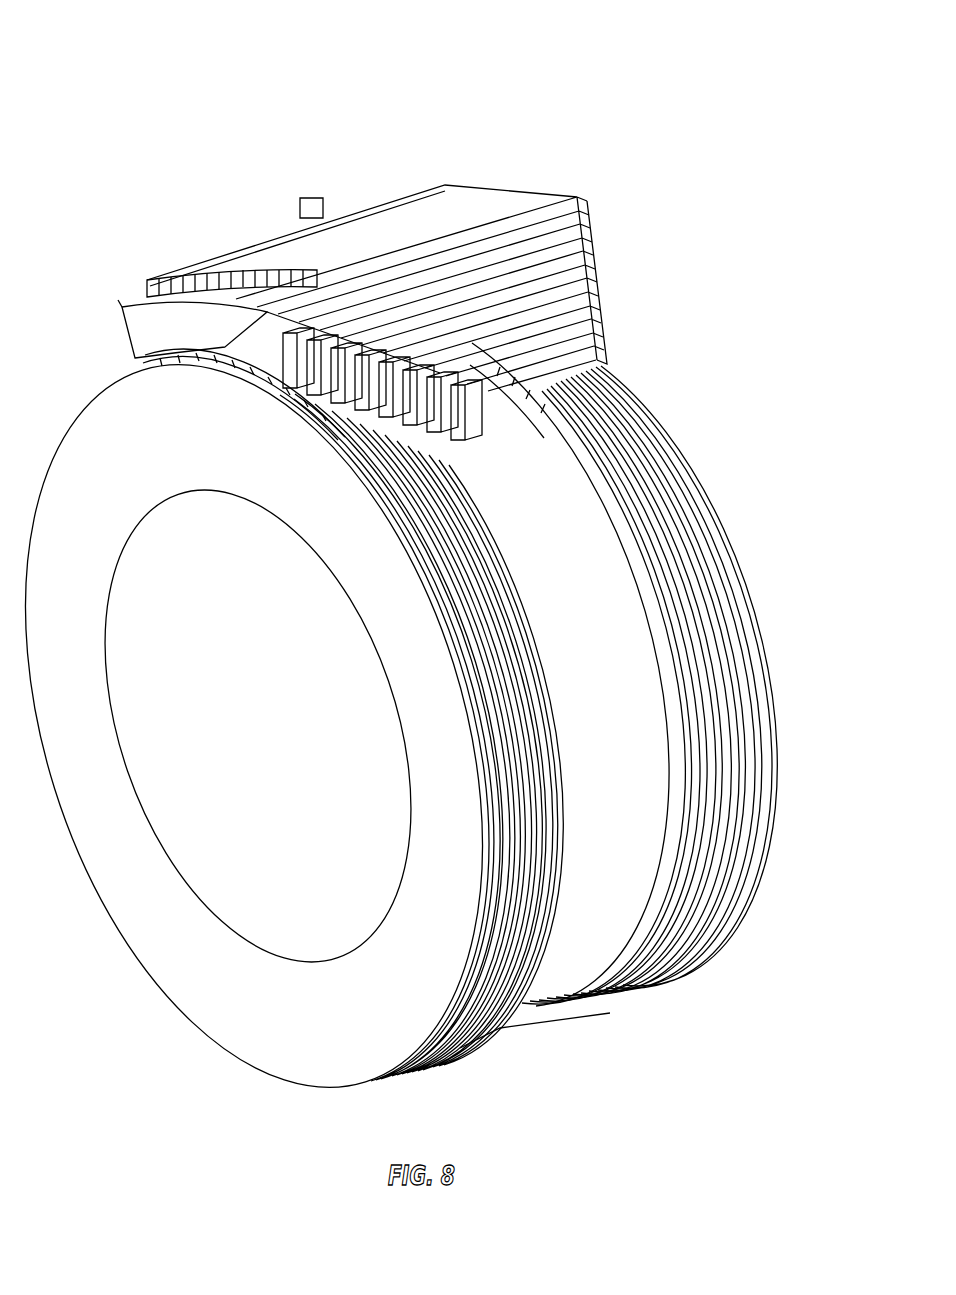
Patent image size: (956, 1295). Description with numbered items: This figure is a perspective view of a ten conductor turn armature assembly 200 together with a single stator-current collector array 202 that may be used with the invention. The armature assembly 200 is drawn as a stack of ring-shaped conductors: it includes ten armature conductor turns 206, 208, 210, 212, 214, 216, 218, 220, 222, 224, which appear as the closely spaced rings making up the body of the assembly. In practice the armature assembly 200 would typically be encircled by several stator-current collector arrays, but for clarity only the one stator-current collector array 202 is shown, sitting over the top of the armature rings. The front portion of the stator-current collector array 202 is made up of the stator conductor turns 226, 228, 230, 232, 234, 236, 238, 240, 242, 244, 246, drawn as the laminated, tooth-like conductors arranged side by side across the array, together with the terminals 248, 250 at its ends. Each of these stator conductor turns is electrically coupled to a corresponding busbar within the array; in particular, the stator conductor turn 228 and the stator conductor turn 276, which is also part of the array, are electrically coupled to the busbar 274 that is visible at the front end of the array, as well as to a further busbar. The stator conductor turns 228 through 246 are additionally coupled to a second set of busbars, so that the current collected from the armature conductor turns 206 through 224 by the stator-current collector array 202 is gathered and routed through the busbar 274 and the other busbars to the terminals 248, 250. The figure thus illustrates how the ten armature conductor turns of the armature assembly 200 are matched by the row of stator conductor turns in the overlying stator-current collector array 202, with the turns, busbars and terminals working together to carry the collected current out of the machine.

The armature assembly 200 is at (202, 967).
The stator-current collector array 202 is at (344, 551).
The armature conductor turn 206 is at (730, 538).
The armature conductor turn 208 is at (732, 575).
The armature conductor turn 210 is at (731, 610).
The armature conductor turn 212 is at (729, 647).
The armature conductor turn 214 is at (726, 681).
The armature conductor turn 216 is at (722, 716).
The armature conductor turn 218 is at (715, 750).
The armature conductor turn 220 is at (707, 782).
The armature conductor turn 222 is at (697, 812).
The armature conductor turn 224 is at (687, 842).
The stator conductor turn 226 is at (356, 300).
The stator conductor turn 228 is at (210, 367).
The stator conductor turn 230 is at (312, 240).
The stator conductor turn 232 is at (295, 275).
The stator conductor turn 234 is at (450, 227).
The stator conductor turn 236 is at (480, 247).
The stator conductor turn 238 is at (513, 280).
The stator conductor turn 240 is at (545, 300).
The stator conductor turn 242 is at (570, 313).
The stator conductor turn 244 is at (593, 254).
The stator conductor turn 246 is at (463, 362).
The terminal 248 is at (425, 290).
The terminal 250 is at (582, 350).
The busbar 274 is at (137, 325).
The stator conductor turn 276 is at (122, 300).